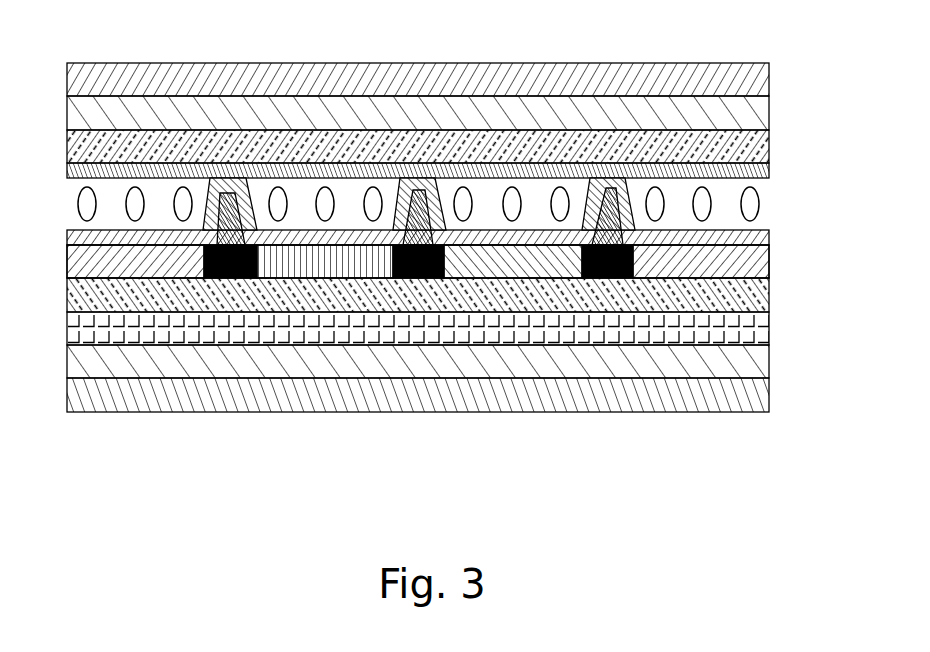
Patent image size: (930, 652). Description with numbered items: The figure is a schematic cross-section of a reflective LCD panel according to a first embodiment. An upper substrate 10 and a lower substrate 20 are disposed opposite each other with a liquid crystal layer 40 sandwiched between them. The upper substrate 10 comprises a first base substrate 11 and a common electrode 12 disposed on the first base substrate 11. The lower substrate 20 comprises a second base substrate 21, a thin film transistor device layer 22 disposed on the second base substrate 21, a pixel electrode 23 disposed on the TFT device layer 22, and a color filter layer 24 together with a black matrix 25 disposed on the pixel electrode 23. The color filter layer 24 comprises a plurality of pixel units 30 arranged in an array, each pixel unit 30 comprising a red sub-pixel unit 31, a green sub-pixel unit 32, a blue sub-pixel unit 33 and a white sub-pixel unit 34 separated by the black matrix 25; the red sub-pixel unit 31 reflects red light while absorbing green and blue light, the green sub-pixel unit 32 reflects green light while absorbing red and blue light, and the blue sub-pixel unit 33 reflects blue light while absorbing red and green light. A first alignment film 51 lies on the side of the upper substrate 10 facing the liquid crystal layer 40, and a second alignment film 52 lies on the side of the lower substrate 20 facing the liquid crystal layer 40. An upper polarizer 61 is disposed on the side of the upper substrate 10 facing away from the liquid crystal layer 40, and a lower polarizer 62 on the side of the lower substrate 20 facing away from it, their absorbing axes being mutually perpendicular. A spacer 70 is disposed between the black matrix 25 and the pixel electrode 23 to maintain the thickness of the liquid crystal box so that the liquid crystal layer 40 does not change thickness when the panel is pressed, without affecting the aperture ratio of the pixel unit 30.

The upper substrate 10 is at (425, 125).
The first base substrate 11 is at (737, 115).
The common electrode 12 is at (737, 150).
The lower substrate 20 is at (422, 386).
The second base substrate 21 is at (738, 367).
The thin film transistor device layer 22 is at (738, 333).
The pixel electrode 23 is at (738, 300).
The color filter layer 24 is at (448, 386).
The black matrix 25 is at (232, 278).
The pixel unit 30 is at (418, 388).
The red sub-pixel unit 31 is at (128, 265).
The green sub-pixel unit 32 is at (320, 278).
The blue sub-pixel unit 33 is at (513, 263).
The white sub-pixel unit 34 is at (701, 362).
The liquid crystal layer 40 is at (80, 206).
The first alignment film 51 is at (760, 175).
The second alignment film 52 is at (740, 242).
The upper polarizer 61 is at (737, 85).
The lower polarizer 62 is at (738, 400).
The spacer 70 is at (240, 200).